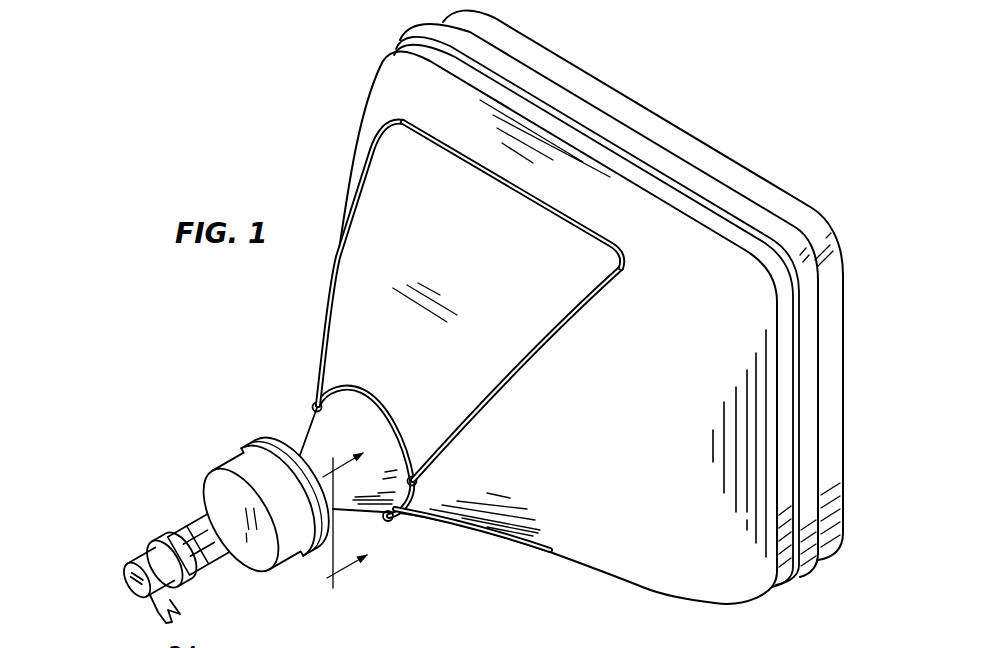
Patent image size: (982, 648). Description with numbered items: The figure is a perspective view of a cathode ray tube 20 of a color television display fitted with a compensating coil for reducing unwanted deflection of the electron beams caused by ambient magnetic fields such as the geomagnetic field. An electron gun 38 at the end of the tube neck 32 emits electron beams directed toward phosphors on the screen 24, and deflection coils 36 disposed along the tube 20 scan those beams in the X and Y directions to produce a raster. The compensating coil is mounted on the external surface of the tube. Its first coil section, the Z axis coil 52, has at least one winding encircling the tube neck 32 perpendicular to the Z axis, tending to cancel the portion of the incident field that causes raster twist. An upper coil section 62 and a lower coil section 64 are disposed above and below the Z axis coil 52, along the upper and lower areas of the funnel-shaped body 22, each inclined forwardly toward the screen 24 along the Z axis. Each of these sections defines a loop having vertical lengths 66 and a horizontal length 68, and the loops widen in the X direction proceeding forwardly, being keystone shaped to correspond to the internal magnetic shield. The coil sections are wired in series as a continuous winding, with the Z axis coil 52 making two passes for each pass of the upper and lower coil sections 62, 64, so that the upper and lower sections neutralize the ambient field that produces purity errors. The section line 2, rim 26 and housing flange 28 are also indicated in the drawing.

The section line 2- 2 is at (345, 518).
The cathode ray tube 20 is at (398, 92).
The funnel-shaped body 22 is at (352, 330).
The screen 24 is at (695, 136).
The lens rim 26 is at (813, 327).
The housing flange 28 is at (712, 231).
The tube neck 32 is at (147, 553).
The deflection coils 36 is at (210, 482).
The electron gun 38 is at (123, 583).
The Z axis coil 52 is at (362, 392).
The upper coil section 62 is at (505, 377).
The lower coil section 64 is at (573, 572).
The vertical lengths 66 is at (348, 252).
The horizontal length 68 is at (524, 187).